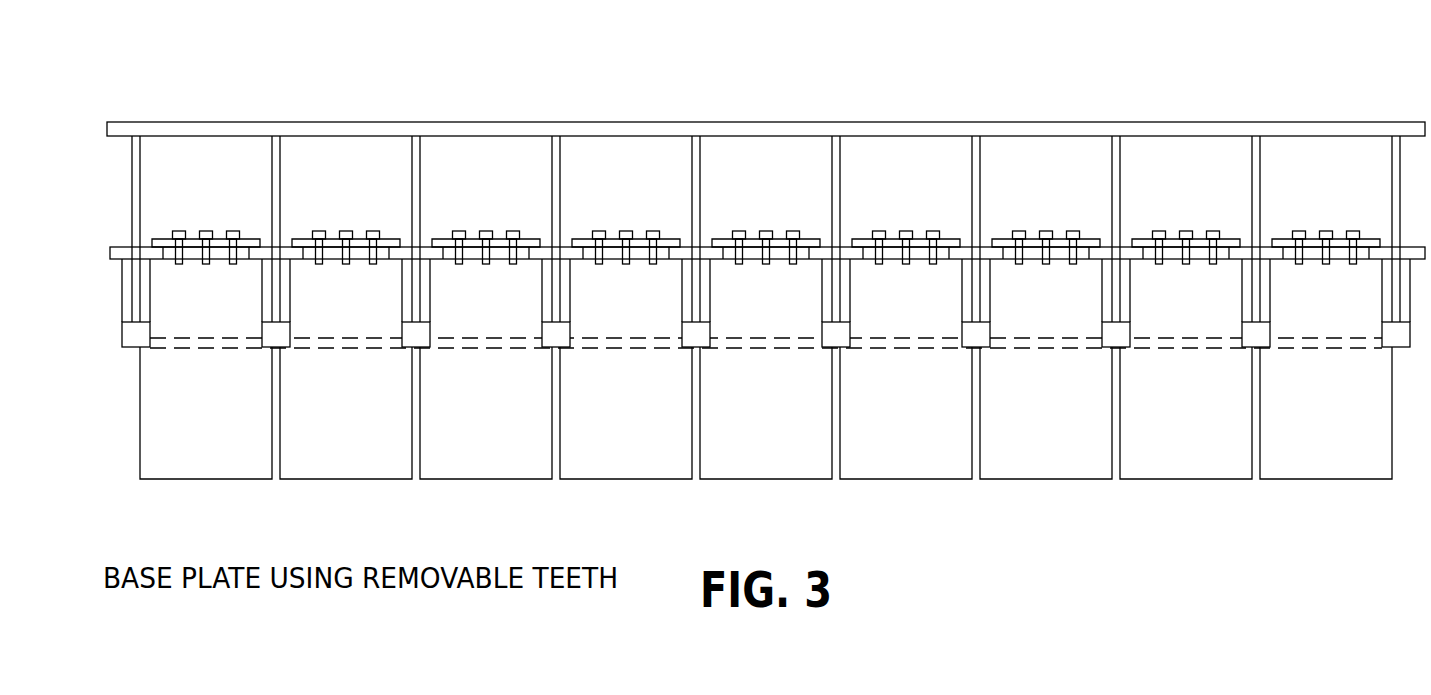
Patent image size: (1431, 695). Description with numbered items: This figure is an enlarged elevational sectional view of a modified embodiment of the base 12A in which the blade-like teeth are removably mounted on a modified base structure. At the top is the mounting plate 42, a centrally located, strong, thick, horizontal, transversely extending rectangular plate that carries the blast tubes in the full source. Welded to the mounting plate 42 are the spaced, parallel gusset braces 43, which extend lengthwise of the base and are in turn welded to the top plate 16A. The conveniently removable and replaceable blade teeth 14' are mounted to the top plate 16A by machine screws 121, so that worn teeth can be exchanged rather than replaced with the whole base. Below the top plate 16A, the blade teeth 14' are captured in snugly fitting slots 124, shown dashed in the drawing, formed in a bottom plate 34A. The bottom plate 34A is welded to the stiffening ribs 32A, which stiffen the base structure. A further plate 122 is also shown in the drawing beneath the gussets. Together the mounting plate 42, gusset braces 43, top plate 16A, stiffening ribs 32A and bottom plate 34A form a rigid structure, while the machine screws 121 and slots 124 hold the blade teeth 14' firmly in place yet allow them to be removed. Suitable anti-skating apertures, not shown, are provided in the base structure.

The base 12A is at (1170, 113).
The mounting plate 42 is at (1030, 122).
The gusset braces 43 is at (557, 210).
The top plate 16A is at (562, 250).
The machine screws 121 is at (793, 231).
The base plate 122 is at (982, 250).
The slots 124 is at (610, 345).
The stiffening ribs 32A is at (552, 301).
The bottom plate 34A is at (769, 367).
The blade teeth 14' is at (766, 451).